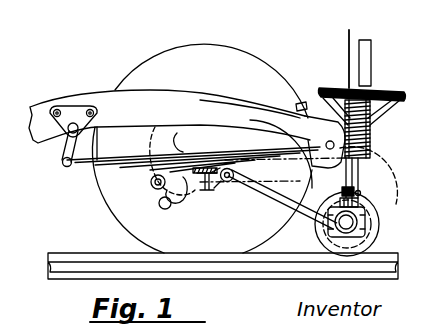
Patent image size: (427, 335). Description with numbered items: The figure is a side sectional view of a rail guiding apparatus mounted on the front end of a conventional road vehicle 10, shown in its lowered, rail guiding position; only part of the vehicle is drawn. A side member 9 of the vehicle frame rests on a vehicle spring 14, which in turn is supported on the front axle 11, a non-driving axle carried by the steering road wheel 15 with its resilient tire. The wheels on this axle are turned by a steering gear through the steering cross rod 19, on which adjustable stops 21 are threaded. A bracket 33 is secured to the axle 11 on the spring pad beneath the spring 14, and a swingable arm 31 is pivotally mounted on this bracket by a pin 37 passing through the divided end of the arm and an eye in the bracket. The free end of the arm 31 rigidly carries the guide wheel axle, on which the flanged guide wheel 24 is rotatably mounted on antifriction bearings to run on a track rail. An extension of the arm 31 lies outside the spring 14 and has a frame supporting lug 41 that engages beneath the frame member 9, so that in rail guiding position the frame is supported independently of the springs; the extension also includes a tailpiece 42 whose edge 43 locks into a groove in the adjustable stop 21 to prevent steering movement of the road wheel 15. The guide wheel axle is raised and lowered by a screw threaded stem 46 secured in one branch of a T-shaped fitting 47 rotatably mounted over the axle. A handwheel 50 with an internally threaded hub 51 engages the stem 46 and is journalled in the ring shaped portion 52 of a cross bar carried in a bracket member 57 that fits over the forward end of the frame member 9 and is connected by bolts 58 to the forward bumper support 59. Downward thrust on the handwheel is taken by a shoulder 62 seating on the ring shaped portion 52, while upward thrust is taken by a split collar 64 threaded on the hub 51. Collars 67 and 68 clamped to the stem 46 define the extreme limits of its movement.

The side members of the frame 9 is at (95, 100).
The road vehicle 10 is at (55, 90).
The front axle 11 is at (205, 190).
The vehicle springs 14 is at (83, 166).
The road wheels 15 is at (182, 68).
The steering cross rod 19 is at (160, 201).
The adjustable stops 21 is at (151, 183).
The flanged guide wheel 24 is at (361, 224).
The swingable arm 31 is at (287, 198).
The brackets 33 is at (210, 193).
The pin 37 is at (230, 187).
The frame supporting lug 41 is at (173, 133).
The tailpiece 42 is at (207, 108).
The edge of tailpiece 43 is at (178, 205).
The screw threaded stem 46 is at (357, 160).
The T-shaped fitting 47 is at (365, 222).
The handwheel 50 is at (358, 49).
The internally threaded hub 51 is at (379, 93).
The ring shaped portion 52 is at (372, 112).
The bracket member 57 is at (336, 115).
The bolts 58 is at (300, 121).
The forward bumper supports 59 is at (302, 104).
The shoulder 62 is at (347, 90).
The split collar 64 is at (371, 130).
The collar 67 is at (380, 172).
The collar 68 is at (371, 85).